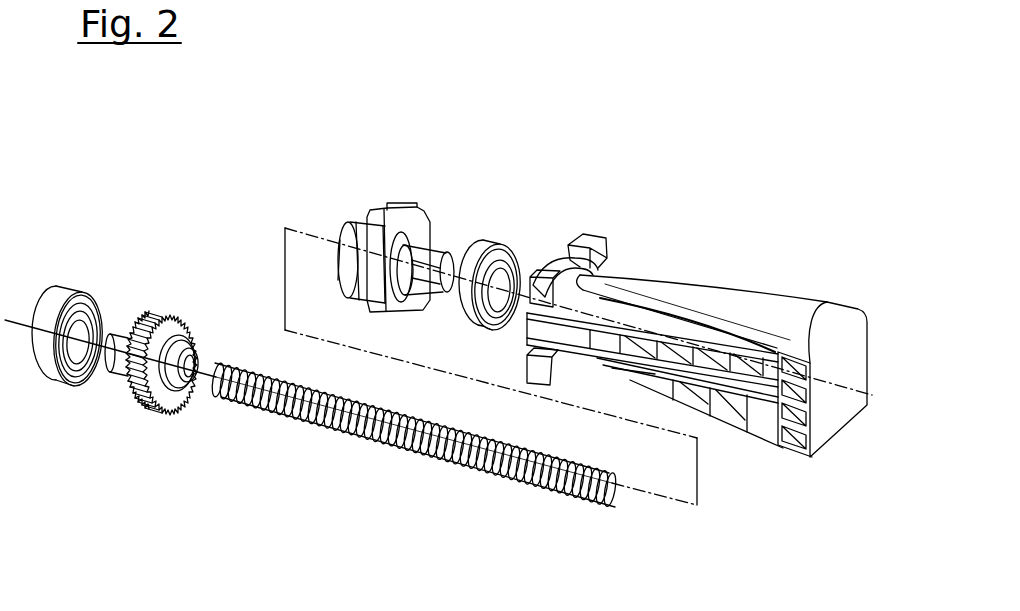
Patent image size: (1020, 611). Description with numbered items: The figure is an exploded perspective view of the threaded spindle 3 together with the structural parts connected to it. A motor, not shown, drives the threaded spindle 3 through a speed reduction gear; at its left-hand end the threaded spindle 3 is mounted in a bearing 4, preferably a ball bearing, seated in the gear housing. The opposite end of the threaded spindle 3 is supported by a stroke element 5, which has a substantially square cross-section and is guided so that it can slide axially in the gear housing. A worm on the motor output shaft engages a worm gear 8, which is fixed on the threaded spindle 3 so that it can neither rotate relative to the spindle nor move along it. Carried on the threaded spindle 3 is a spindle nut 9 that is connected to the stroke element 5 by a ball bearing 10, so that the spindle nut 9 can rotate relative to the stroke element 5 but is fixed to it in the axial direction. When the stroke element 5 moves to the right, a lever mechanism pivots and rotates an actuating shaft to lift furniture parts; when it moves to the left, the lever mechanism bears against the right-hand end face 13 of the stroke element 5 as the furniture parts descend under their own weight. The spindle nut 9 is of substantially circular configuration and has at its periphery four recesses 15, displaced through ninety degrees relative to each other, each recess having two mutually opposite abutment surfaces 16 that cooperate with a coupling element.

The threaded spindle 3 is at (282, 413).
The bearing 4 is at (42, 363).
The stroke element 5 is at (697, 329).
The worm gear 8 is at (135, 413).
The spindle nut 9 is at (332, 205).
The ball bearing 10 is at (493, 247).
The right-hand end face 13 is at (833, 403).
The recesses 15 is at (383, 218).
The abutment surfaces 16 is at (392, 208).